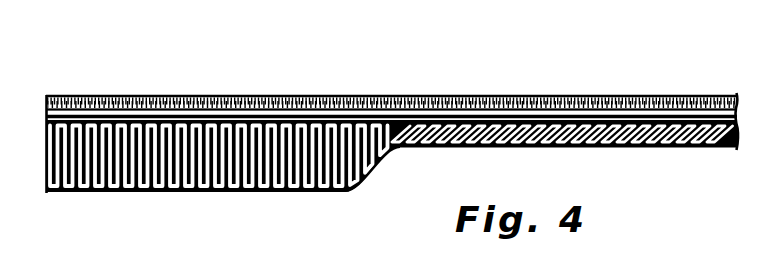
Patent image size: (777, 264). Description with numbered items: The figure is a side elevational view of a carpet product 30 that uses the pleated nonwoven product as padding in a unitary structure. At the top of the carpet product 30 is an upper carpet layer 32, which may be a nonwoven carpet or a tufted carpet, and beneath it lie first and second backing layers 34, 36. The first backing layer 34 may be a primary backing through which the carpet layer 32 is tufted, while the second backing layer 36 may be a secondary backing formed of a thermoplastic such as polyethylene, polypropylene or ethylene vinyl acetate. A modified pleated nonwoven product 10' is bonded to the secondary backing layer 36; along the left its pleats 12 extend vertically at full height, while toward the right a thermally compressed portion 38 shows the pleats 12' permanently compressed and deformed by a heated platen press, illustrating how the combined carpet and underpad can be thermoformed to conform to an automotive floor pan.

The carpet product 30 is at (607, 60).
The upper carpet layer 32 is at (660, 97).
The first backing layer 34 is at (445, 107).
The second backing layer 36 is at (480, 98).
The thermally compressed portion 38 is at (632, 151).
The pleats 12 is at (391, 185).
The compressed pleats 12' is at (564, 149).
The pleated nonwoven product 10' is at (223, 199).